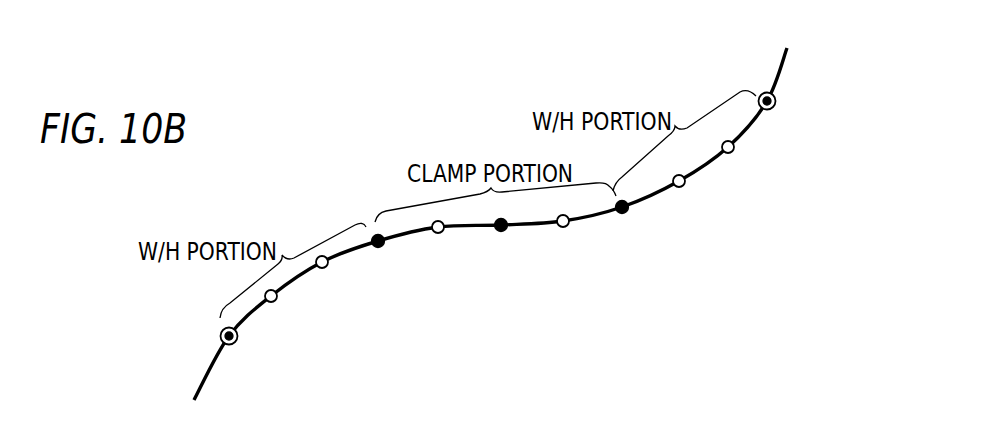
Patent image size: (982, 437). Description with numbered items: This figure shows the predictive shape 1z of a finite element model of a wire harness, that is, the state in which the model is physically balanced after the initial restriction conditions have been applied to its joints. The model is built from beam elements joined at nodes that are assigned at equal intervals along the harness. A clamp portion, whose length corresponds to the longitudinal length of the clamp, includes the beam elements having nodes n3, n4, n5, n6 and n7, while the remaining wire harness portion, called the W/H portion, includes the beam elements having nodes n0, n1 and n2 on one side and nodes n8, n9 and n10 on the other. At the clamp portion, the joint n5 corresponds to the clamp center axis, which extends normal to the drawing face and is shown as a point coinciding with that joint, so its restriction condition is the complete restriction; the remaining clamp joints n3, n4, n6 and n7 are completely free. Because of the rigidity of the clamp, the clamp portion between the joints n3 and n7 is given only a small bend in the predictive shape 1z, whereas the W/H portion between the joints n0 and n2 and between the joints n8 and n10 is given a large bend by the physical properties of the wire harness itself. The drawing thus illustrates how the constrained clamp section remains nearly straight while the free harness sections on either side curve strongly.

The predictive shape 1z is at (470, 231).
The node n0 is at (236, 343).
The node n1 is at (275, 301).
The node n2 is at (324, 268).
The node n3 is at (380, 247).
The node n4 is at (440, 233).
The node n5 is at (502, 232).
The node n6 is at (565, 227).
The node n7 is at (627, 213).
The node n8 is at (683, 187).
The node n9 is at (732, 153).
The node n10 is at (772, 107).